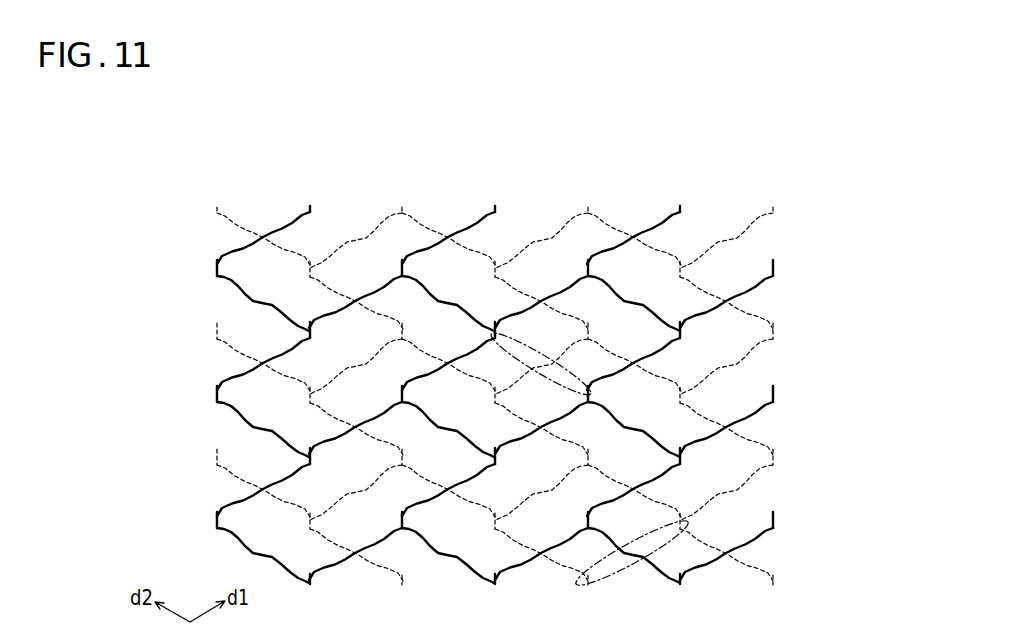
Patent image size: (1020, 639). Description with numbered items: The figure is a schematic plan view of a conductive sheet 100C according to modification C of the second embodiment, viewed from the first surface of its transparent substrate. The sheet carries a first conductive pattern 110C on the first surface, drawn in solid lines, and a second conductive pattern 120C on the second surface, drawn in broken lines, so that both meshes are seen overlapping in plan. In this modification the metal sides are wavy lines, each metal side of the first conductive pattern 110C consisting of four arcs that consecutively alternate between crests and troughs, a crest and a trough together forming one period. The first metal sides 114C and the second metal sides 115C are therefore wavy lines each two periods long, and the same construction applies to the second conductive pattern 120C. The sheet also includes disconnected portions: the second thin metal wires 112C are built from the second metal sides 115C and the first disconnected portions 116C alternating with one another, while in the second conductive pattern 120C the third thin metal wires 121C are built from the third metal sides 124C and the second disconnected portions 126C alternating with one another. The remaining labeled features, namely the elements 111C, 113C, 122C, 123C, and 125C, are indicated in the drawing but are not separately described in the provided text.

The conductive sheet 100C is at (335, 172).
The first conductive pattern 110C is at (705, 191).
The first wavy strand 111C is at (776, 284).
The second thin metal wires 112C is at (658, 312).
The connection portion 113C is at (684, 332).
The first metal sides 114C is at (668, 347).
The second metal sides 115C is at (595, 400).
The first disconnected portions 116C is at (502, 333).
The second conductive pattern 120C is at (607, 198).
The third thin metal wires 121C is at (752, 481).
The connecting strand of second mesh 122C is at (758, 571).
The connection portion of second mesh 123C is at (778, 453).
The third metal sides 124C is at (693, 503).
The node portion of second mesh 125C is at (593, 470).
The second disconnected portions 126C is at (606, 580).